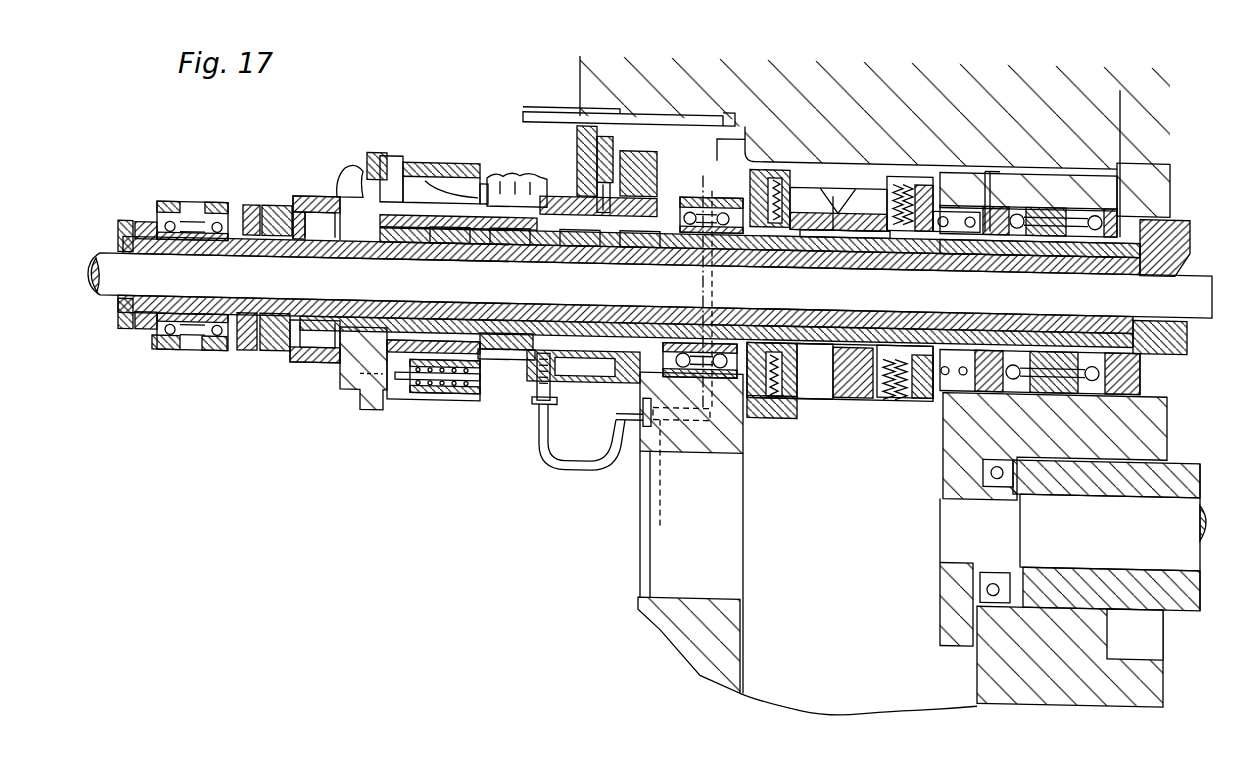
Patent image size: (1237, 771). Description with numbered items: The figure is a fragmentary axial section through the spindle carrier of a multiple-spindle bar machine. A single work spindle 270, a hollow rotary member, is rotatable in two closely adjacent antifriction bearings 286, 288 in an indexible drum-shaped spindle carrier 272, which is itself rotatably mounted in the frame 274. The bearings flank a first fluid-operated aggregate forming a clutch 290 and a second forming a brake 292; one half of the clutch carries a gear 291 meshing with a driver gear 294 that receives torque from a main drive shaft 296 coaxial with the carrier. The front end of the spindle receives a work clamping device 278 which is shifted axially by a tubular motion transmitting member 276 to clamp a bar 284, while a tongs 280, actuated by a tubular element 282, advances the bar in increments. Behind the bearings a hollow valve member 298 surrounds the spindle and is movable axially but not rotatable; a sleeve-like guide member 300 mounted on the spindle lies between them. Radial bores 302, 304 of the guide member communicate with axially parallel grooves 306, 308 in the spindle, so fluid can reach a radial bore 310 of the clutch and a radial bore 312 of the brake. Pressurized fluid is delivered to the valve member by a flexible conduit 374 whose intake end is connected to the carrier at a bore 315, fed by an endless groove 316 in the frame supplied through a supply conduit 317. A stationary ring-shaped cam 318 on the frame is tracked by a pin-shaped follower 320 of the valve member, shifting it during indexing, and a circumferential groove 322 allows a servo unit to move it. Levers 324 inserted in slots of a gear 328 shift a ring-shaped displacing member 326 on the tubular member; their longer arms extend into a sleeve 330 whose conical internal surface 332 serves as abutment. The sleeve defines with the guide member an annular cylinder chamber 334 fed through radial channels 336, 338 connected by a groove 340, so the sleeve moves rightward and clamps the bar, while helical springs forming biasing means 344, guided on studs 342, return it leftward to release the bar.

The work spindle 270 is at (823, 340).
The spindle carrier 272 is at (1100, 171).
The frame 274 is at (1103, 86).
The tubular motion transmitting member 276 is at (867, 323).
The work clamping device 278 is at (1190, 239).
The tongs 280 is at (1100, 251).
The tubular element 282 is at (295, 343).
The bar 284 is at (1187, 291).
The antifriction bearing 286 is at (1000, 359).
The antifriction bearing 288 is at (700, 429).
The clutch 290 is at (913, 155).
The gear 291 is at (965, 160).
The brake 292 is at (801, 170).
The driver gear 294 is at (953, 457).
The main drive shaft 296 is at (1183, 539).
The valve member 298 is at (563, 182).
The tubular guide member 300 is at (487, 347).
The radial bore 302 is at (580, 222).
The radial bore 304 is at (510, 337).
The axially parallel groove 306 is at (643, 220).
The axially parallel groove 308 is at (627, 411).
The radial bore of the clutch 310 is at (867, 213).
The radial bore of the brake 312 is at (807, 341).
The bore 315 is at (660, 480).
The endless groove 316 is at (717, 152).
The supply conduit 317 is at (543, 105).
The cam 318 is at (583, 132).
The follower 320 is at (610, 178).
The circumferential groove 322 is at (547, 173).
The levers 324 is at (347, 172).
The ring-shaped displacing member 326 is at (297, 207).
The gear 328 is at (360, 387).
The sleeve 330 is at (492, 109).
The conical internal surface 332 is at (483, 173).
The annular cylinder chamber 334 is at (452, 213).
The radial channel 336 is at (547, 222).
The radial channel 338 is at (442, 222).
The axially parallel groove 340 is at (507, 223).
The stud 342 is at (395, 373).
The biasing means 344 is at (453, 385).
The hose 374 is at (560, 450).